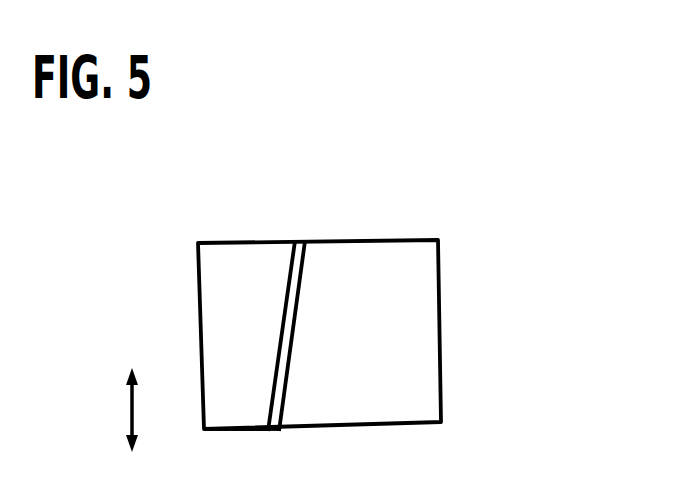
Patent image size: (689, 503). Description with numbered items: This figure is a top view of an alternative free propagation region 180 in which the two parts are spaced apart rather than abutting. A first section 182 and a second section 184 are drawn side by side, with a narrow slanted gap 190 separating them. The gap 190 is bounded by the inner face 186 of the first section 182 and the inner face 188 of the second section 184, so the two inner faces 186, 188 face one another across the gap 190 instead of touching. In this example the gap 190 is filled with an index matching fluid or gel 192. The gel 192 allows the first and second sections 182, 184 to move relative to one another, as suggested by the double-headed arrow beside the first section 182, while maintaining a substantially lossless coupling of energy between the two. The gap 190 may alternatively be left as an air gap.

The free propagation region 180 is at (336, 172).
The first section 182 is at (218, 430).
The second section 184 is at (443, 407).
The inner face 186 is at (295, 240).
The inner face 188 is at (270, 430).
The gap 190 is at (311, 226).
The index matching fluid or gel 192 is at (290, 293).